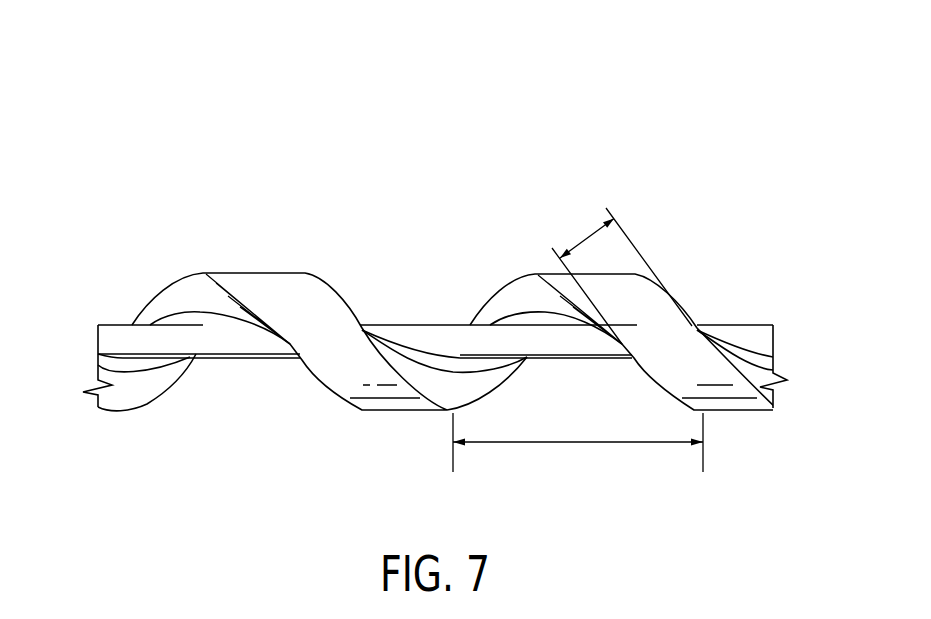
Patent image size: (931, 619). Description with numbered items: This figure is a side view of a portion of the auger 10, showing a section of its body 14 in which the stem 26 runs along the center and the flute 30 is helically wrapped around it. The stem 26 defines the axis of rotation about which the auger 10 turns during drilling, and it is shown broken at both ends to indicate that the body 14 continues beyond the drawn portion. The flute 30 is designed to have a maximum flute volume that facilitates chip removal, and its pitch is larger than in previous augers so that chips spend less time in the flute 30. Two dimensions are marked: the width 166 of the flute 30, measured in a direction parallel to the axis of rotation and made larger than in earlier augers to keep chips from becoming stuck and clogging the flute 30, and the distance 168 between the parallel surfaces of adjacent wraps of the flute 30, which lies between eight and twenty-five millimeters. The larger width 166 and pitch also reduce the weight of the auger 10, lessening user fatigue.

The auger 10 is at (501, 124).
The body 14 is at (315, 202).
The stem 26 is at (217, 352).
The flute 30 is at (176, 299).
The width 166 is at (563, 442).
The distance 168 is at (588, 238).